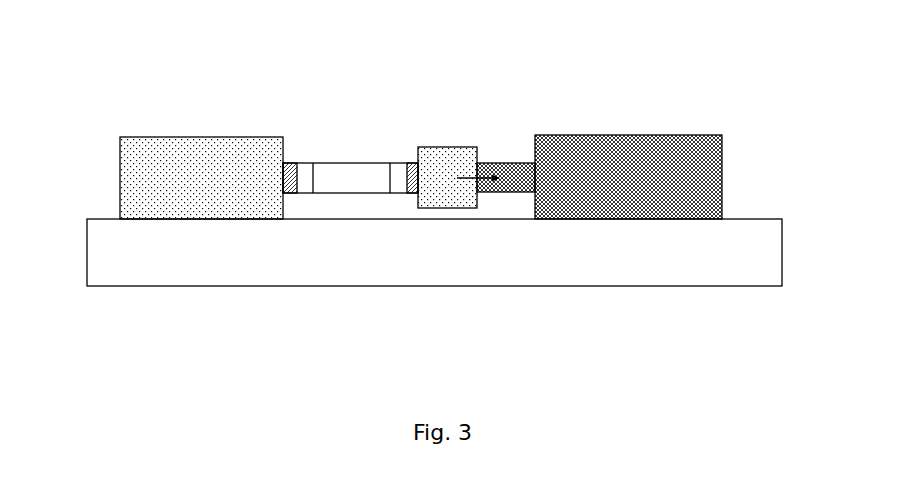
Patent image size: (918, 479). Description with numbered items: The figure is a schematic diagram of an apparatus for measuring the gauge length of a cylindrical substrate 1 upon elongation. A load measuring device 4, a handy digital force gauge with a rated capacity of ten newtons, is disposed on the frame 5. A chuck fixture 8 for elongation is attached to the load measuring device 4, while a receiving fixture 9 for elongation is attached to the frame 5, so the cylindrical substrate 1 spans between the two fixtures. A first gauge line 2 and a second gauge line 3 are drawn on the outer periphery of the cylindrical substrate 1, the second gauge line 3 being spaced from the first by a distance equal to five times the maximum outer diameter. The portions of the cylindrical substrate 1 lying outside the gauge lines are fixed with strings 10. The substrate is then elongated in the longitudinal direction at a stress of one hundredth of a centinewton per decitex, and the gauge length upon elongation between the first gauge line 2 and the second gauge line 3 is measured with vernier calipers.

The cylindrical substrate 1 is at (350, 161).
The first gauge line 2 is at (312, 160).
The second gauge line 3 is at (392, 160).
The load measuring device 4 is at (649, 133).
The frame 5 is at (566, 289).
The chuck fixture for elongation 8 is at (450, 144).
The receiving fixture for elongation 9 is at (215, 135).
The strings 10 is at (297, 207).